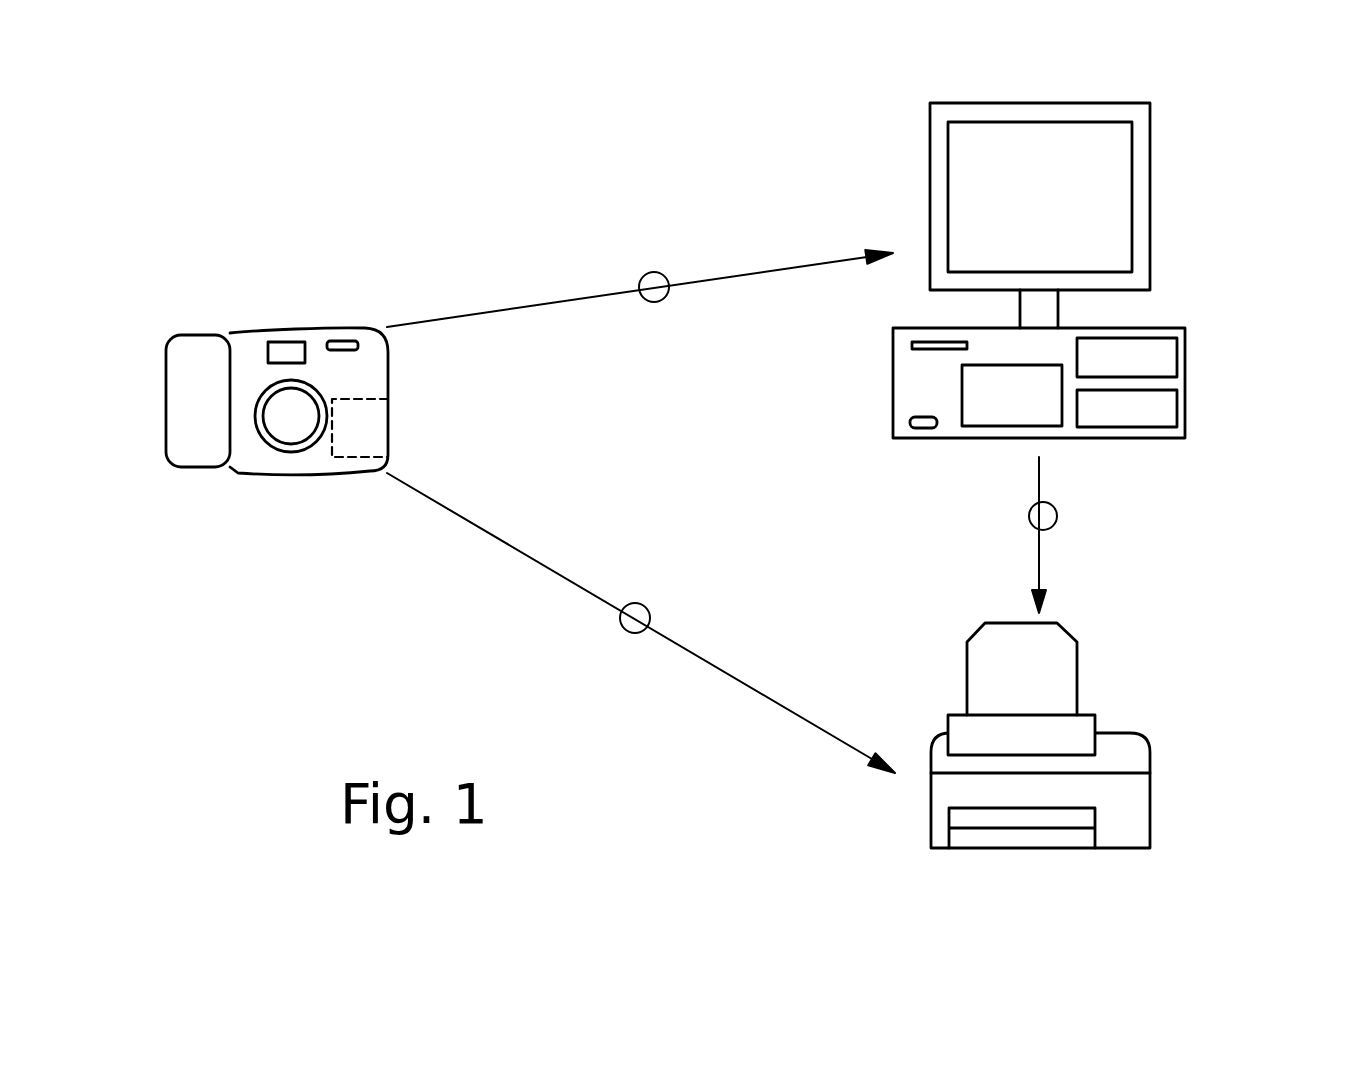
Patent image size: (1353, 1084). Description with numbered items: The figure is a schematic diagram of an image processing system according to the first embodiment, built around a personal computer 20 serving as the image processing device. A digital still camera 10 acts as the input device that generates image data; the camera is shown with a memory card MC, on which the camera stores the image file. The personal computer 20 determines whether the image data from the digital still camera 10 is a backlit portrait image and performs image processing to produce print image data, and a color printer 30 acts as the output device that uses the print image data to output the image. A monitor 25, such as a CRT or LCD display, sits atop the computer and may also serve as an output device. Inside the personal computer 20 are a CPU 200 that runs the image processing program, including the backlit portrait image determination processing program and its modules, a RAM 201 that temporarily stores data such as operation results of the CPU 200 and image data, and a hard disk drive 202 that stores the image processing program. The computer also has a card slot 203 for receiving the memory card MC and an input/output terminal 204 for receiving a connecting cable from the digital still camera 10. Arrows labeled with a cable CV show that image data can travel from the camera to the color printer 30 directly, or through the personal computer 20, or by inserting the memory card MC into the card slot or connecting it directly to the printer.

The digital still camera 10 is at (257, 330).
The memory card MC is at (367, 426).
The cable CV is at (650, 272).
The personal computer 20 is at (1052, 306).
The monitor 25 is at (1150, 202).
The CPU 200 is at (1168, 390).
The RAM 201 is at (1170, 340).
The hard disk drive (HDD) 202 is at (973, 427).
The card slot 203 is at (921, 343).
The input/output terminal 204 is at (916, 420).
The color printer 30 is at (1112, 733).